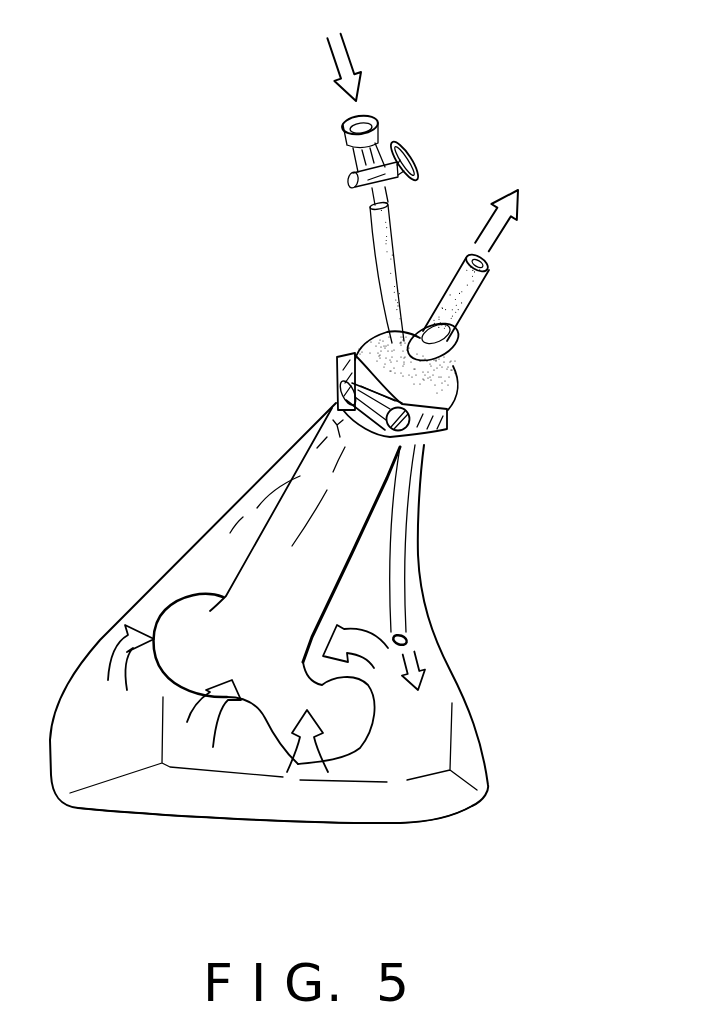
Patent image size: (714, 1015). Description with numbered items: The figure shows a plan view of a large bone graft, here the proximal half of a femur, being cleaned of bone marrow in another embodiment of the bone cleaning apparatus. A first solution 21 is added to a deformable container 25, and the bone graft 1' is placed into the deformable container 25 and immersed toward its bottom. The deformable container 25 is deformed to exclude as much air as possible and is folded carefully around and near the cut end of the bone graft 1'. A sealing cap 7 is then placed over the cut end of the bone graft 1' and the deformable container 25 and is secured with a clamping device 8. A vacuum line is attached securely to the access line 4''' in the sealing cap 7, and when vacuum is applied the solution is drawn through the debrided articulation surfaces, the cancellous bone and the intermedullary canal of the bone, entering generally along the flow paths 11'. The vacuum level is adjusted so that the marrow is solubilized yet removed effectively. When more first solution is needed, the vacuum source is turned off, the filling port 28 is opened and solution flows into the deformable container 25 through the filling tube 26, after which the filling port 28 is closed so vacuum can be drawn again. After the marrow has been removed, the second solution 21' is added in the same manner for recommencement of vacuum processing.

The filling port 28 is at (382, 147).
The filling tube 26 is at (380, 235).
The access line 4''' is at (501, 309).
The sealing cap 7 is at (465, 384).
The clamping device 8 is at (452, 427).
The deformable container 25 is at (445, 660).
The first solution 21 is at (351, 764).
The second solution 21' is at (351, 764).
The bone graft 1' is at (329, 586).
The flow paths 11' is at (261, 719).